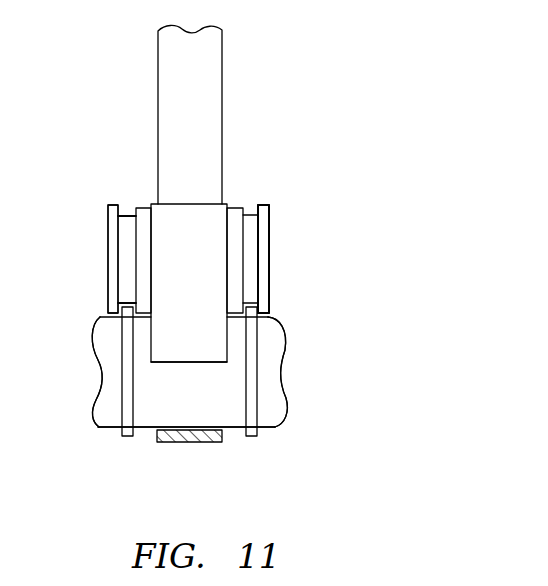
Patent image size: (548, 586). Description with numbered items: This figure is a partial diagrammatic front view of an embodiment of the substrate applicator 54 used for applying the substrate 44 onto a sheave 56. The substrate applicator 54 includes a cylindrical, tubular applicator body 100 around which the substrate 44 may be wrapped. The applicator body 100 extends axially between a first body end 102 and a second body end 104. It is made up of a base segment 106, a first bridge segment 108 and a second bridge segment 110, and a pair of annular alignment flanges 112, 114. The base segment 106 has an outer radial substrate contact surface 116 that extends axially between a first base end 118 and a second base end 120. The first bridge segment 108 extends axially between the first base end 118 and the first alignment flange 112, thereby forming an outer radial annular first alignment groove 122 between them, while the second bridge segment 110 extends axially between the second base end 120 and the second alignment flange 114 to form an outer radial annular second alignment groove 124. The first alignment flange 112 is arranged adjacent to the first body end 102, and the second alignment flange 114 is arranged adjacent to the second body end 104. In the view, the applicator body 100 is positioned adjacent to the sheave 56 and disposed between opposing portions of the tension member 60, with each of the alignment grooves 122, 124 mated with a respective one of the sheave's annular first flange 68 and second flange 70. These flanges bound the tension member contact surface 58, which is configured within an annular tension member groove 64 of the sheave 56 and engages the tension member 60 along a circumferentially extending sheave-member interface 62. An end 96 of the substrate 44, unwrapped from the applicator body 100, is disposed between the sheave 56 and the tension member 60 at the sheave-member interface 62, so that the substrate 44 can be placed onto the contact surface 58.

The tension member 60 is at (205, 77).
The substrate 44 is at (160, 330).
The tension member groove 64 is at (231, 408).
The sheave 56 is at (291, 327).
The tension member contact surface 58 is at (237, 428).
The end of the substrate 96 is at (188, 363).
The sheave-member interface 62 is at (154, 434).
The first flange 68 is at (127, 437).
The second flange 70 is at (250, 437).
The substrate contact surface 116 is at (145, 207).
The base segment 106 is at (237, 207).
The first bridge segment 108 is at (128, 215).
The first base end 118 is at (125, 222).
The first alignment groove 122 is at (123, 287).
The first alignment flange 112 is at (112, 205).
The first body end 102 is at (108, 265).
The second alignment groove 124 is at (254, 258).
The second bridge segment 110 is at (263, 205).
The second alignment flange 114 is at (284, 198).
The substrate applicator 54 is at (270, 207).
The second base end 120 is at (270, 222).
The applicator body 100 is at (277, 235).
The second body end 104 is at (271, 272).